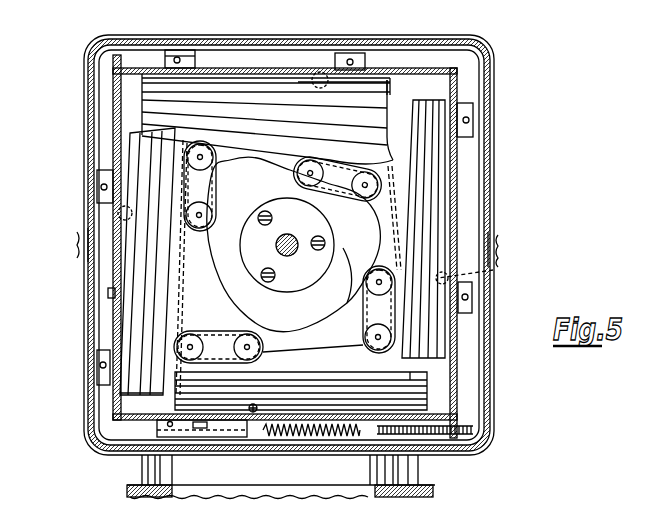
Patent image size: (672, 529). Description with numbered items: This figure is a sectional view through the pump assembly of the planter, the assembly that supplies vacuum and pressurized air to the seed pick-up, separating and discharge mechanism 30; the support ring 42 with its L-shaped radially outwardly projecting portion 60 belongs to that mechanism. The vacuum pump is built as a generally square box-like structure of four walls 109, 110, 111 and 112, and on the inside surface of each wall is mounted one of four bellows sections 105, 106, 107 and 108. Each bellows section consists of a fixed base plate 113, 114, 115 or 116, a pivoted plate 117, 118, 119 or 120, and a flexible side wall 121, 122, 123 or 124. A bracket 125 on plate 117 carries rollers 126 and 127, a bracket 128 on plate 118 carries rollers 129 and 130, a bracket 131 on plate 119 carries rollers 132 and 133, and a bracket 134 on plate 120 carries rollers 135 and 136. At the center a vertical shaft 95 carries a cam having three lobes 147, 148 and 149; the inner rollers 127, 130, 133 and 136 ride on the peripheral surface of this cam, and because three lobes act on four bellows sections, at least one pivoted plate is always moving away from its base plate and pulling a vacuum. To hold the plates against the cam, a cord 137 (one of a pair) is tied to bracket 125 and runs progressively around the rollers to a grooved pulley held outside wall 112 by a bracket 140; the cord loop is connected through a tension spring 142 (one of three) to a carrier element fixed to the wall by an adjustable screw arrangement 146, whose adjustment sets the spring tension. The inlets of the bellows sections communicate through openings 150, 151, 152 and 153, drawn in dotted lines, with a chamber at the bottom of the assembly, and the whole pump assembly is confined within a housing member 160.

The seed pick-up, separating and discharge mechanism 30 is at (484, 46).
The support ring 42 is at (432, 487).
The radially outwardly projecting portion 60 is at (367, 497).
The shaft 95 is at (280, 233).
The bellows section 105 is at (122, 266).
The bellows section 106 is at (298, 84).
The bellows section 107 is at (446, 333).
The bellows section 108 is at (433, 390).
The wall 109 is at (128, 133).
The wall 110 is at (260, 78).
The wall 111 is at (457, 213).
The wall 112 is at (440, 436).
The base plate 113 is at (90, 171).
The base plate 114 is at (228, 85).
The base plate 115 is at (445, 153).
The base plate 116 is at (420, 412).
The pivoted plate 117 is at (158, 332).
The pivoted plate 118 is at (170, 116).
The pivoted plate 119 is at (440, 177).
The pivoted plate 120 is at (428, 372).
The flexible side wall 121 is at (157, 207).
The flexible side wall 122 is at (368, 110).
The flexible side wall 123 is at (440, 137).
The flexible side wall 124 is at (200, 395).
The bracket 125 is at (183, 141).
The roller 126 is at (214, 200).
The roller 127 is at (175, 214).
The bracket 128 is at (332, 158).
The roller 129 is at (372, 120).
The roller 130 is at (294, 167).
The bracket 131 is at (458, 292).
The roller 132 is at (353, 355).
The roller 133 is at (375, 264).
The bracket 134 is at (178, 368).
The roller 135 is at (262, 283).
The roller 136 is at (280, 352).
The cord 137 is at (176, 320).
The bracket 140 is at (220, 428).
The tension spring 142 is at (330, 437).
The adjustable screw arrangement 146 is at (447, 437).
The lobe 147 is at (258, 172).
The lobe 148 is at (353, 215).
The lobe 149 is at (250, 318).
The opening 150 is at (118, 216).
The opening 151 is at (326, 72).
The opening 152 is at (490, 267).
The opening 153 is at (260, 433).
The housing member 160 is at (487, 447).